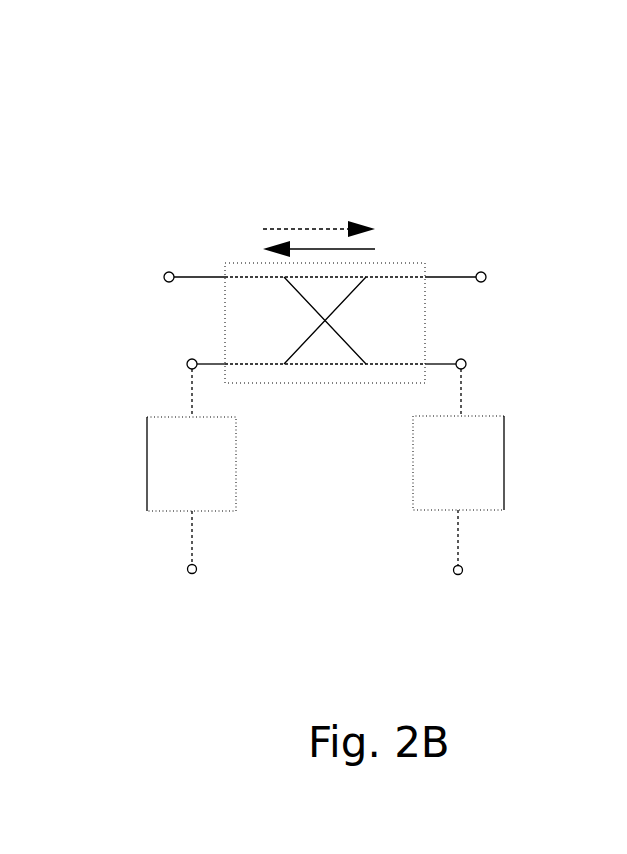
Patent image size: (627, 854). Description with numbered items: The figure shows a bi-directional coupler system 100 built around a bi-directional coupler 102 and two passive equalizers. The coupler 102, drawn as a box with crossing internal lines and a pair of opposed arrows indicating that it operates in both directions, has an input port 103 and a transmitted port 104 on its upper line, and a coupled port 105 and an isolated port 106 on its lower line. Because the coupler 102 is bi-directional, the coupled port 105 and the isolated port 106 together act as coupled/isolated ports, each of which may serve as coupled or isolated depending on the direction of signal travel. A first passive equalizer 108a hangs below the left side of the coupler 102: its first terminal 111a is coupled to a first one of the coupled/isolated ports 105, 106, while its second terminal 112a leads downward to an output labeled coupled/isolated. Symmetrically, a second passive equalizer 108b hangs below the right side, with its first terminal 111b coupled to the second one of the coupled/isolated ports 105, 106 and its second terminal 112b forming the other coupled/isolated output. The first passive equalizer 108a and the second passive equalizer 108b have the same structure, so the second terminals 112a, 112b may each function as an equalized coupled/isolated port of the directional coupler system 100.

The bi-directional coupler system 100 is at (318, 140).
The bi-directional coupler 102 is at (406, 254).
The input port 103 is at (170, 271).
The transmitted port 104 is at (485, 273).
The coupled port 105 is at (188, 359).
The isolated port 106 is at (465, 359).
The first passive equalizer 108a is at (238, 458).
The second passive equalizer 108b is at (506, 458).
The first terminal of first passive equalizer 111a is at (187, 367).
The first terminal of second passive equalizer 111b is at (466, 368).
The second terminal of first passive equalizer 112a is at (187, 569).
The second terminal of second passive equalizer 112b is at (463, 568).